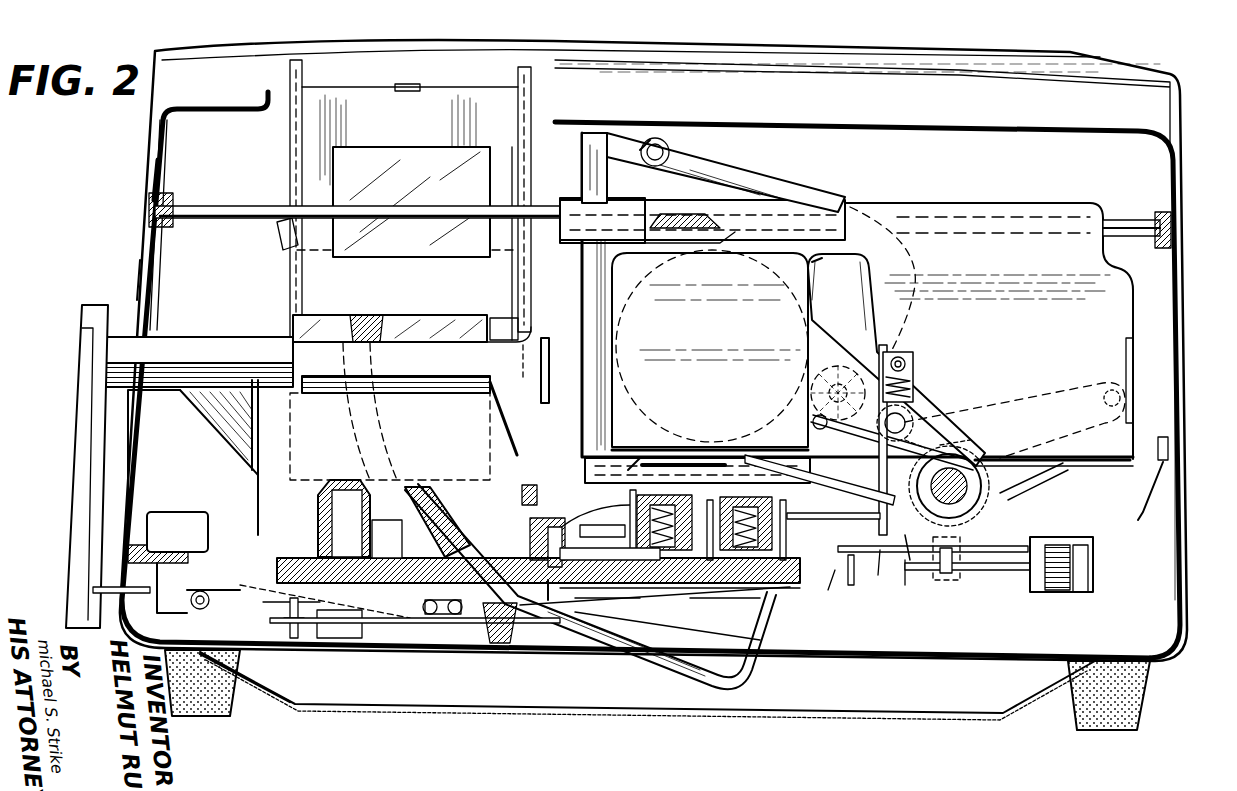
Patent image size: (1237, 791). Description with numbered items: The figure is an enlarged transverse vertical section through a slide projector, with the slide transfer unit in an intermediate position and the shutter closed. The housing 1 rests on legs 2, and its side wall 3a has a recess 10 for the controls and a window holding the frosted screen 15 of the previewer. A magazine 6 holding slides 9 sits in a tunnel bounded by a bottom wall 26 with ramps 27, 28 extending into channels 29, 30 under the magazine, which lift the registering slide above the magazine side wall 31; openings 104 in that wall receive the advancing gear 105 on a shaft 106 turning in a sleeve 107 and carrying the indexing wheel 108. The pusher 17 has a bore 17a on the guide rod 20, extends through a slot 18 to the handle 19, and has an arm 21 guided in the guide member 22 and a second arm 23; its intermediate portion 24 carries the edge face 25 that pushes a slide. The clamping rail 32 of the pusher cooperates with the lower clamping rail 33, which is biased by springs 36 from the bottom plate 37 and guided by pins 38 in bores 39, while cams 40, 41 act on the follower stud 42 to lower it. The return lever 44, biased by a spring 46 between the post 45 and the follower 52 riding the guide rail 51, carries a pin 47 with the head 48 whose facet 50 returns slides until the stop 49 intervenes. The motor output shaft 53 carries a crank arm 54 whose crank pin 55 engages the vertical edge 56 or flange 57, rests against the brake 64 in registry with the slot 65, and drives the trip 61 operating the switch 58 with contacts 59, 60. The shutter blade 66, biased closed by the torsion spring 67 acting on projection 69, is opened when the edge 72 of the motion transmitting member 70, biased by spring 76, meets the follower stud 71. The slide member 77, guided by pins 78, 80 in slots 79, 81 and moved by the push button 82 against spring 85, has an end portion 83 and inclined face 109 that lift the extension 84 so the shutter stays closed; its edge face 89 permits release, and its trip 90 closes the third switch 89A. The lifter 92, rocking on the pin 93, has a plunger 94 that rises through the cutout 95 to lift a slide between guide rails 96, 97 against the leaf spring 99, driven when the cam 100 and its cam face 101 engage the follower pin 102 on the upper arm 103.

The housing 1 is at (955, 128).
The legs 2 is at (1148, 690).
The side wall 3a is at (136, 262).
The magazine 6 is at (397, 400).
The slides 9 is at (297, 300).
The recess 10 is at (143, 418).
The frosted screen 15 is at (150, 148).
The pusher 17 is at (1138, 272).
The horizontal bore 17a is at (968, 215).
The slot 18 is at (206, 420).
The handle 19 is at (85, 375).
The guide rod 20 is at (233, 207).
The arm 21 is at (208, 340).
The guide member 22 is at (240, 386).
The second arm 23 is at (95, 588).
The intermediate portion 24 is at (512, 282).
The edge face 25 is at (583, 310).
The bottom wall 26 is at (405, 650).
The ramp 27 is at (350, 478).
The ramp 28 is at (365, 539).
The channel 29 is at (320, 492).
The channel 30 is at (538, 573).
The side wall 31 is at (515, 486).
The clamping rail 32 is at (650, 208).
The lower clamping rail 33 is at (642, 456).
The helical expansion springs 36 is at (138, 560).
The bottom plate 37 is at (655, 616).
The guide pins 38 is at (612, 596).
The guide bores 39 is at (745, 505).
The cam 40 is at (905, 556).
The cam 41 is at (1040, 500).
The follower stud 42 is at (698, 505).
The return lever 44 is at (808, 497).
The post 45 is at (1000, 572).
The helical spring 46 is at (982, 482).
The pin 47 is at (881, 347).
The motion transmitting head 48 is at (896, 360).
The stop 49 is at (541, 368).
The facet 50 is at (800, 368).
The guide rail 51 is at (620, 512).
The follower 52 is at (937, 582).
The output shaft 53 is at (985, 462).
The crank arm 54 is at (1045, 400).
The crank pin 55 is at (1108, 402).
The vertical edge 56 is at (1095, 565).
The bent-over flange 57 is at (1126, 345).
The switch 58 is at (1048, 594).
The upper contact 59 is at (965, 592).
The contact 60 is at (1015, 588).
The trip 61 is at (970, 425).
The brake 64 is at (1160, 500).
The horizontal slot 65 is at (1125, 468).
The shutter blade 66 is at (814, 266).
The torsion spring 67 is at (945, 425).
The projection 69 is at (812, 418).
The motion transmitting member 70 is at (893, 352).
The follower stud 71 is at (905, 420).
The edge 72 is at (906, 364).
The spring 76 is at (910, 386).
The slide member 77 is at (252, 688).
The pin 78 is at (455, 616).
The slot 79 is at (428, 616).
The pin 80 is at (210, 592).
The slot 81 is at (202, 683).
The push button 82 is at (190, 512).
The end portion 83 is at (858, 562).
The extension 84 is at (877, 578).
The spring 85 is at (495, 648).
The edge face 89 is at (905, 588).
The third switch 89A is at (355, 640).
The trip 90 is at (295, 640).
The lifter 92 is at (752, 665).
The pin 93 is at (846, 205).
The plunger 94 is at (375, 316).
The cutout 95 is at (437, 490).
The guide rail 96 is at (290, 80).
The guide rail 97 is at (520, 72).
The leaf spring 99 is at (406, 91).
The cam 100 is at (598, 135).
The cam face 101 is at (634, 150).
The follower pin 102 is at (670, 152).
The upper arm 103 is at (786, 192).
The opening 104 is at (535, 488).
The advancing gear 105 is at (573, 531).
The shaft 106 is at (610, 567).
The sleeve 107 is at (542, 512).
The indexing wheel 108 is at (548, 604).
The inclined face 109 is at (828, 592).